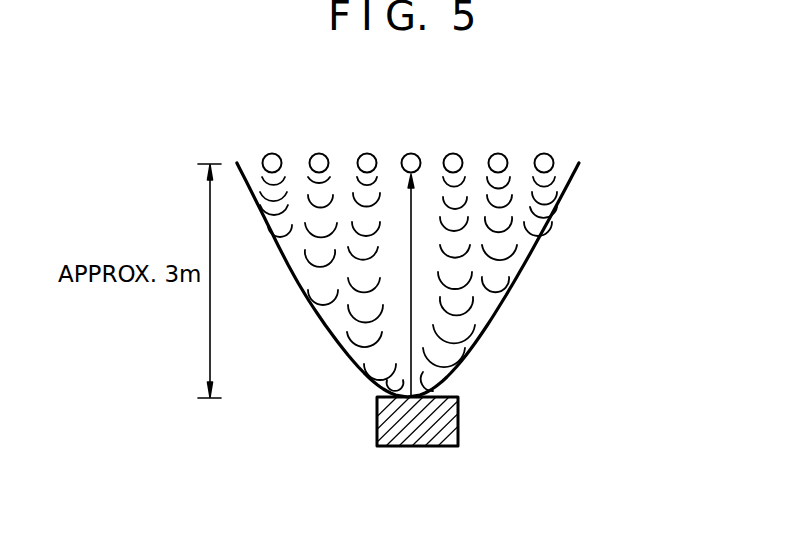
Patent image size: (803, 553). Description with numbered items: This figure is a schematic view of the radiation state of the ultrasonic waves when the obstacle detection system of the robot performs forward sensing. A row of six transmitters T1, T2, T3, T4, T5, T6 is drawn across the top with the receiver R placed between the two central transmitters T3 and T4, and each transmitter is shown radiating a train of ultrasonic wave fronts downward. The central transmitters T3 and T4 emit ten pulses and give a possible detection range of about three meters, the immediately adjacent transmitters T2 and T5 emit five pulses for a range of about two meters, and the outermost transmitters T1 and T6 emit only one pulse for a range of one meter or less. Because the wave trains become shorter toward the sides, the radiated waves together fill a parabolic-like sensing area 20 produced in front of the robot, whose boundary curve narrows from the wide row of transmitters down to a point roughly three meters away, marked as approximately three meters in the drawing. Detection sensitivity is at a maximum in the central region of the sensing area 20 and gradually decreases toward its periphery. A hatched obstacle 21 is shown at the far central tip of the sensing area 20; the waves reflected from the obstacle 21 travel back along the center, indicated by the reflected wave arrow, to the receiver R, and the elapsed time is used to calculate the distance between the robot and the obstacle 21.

The sensing area 20 is at (558, 212).
The obstacle 21 is at (459, 423).
The transmitter T1 is at (274, 179).
The transmitter T2 is at (321, 213).
The transmitter T3 is at (375, 256).
The transmitter T4 is at (448, 256).
The transmitter T5 is at (499, 207).
The transmitter T6 is at (541, 179).
The receiver R is at (412, 259).